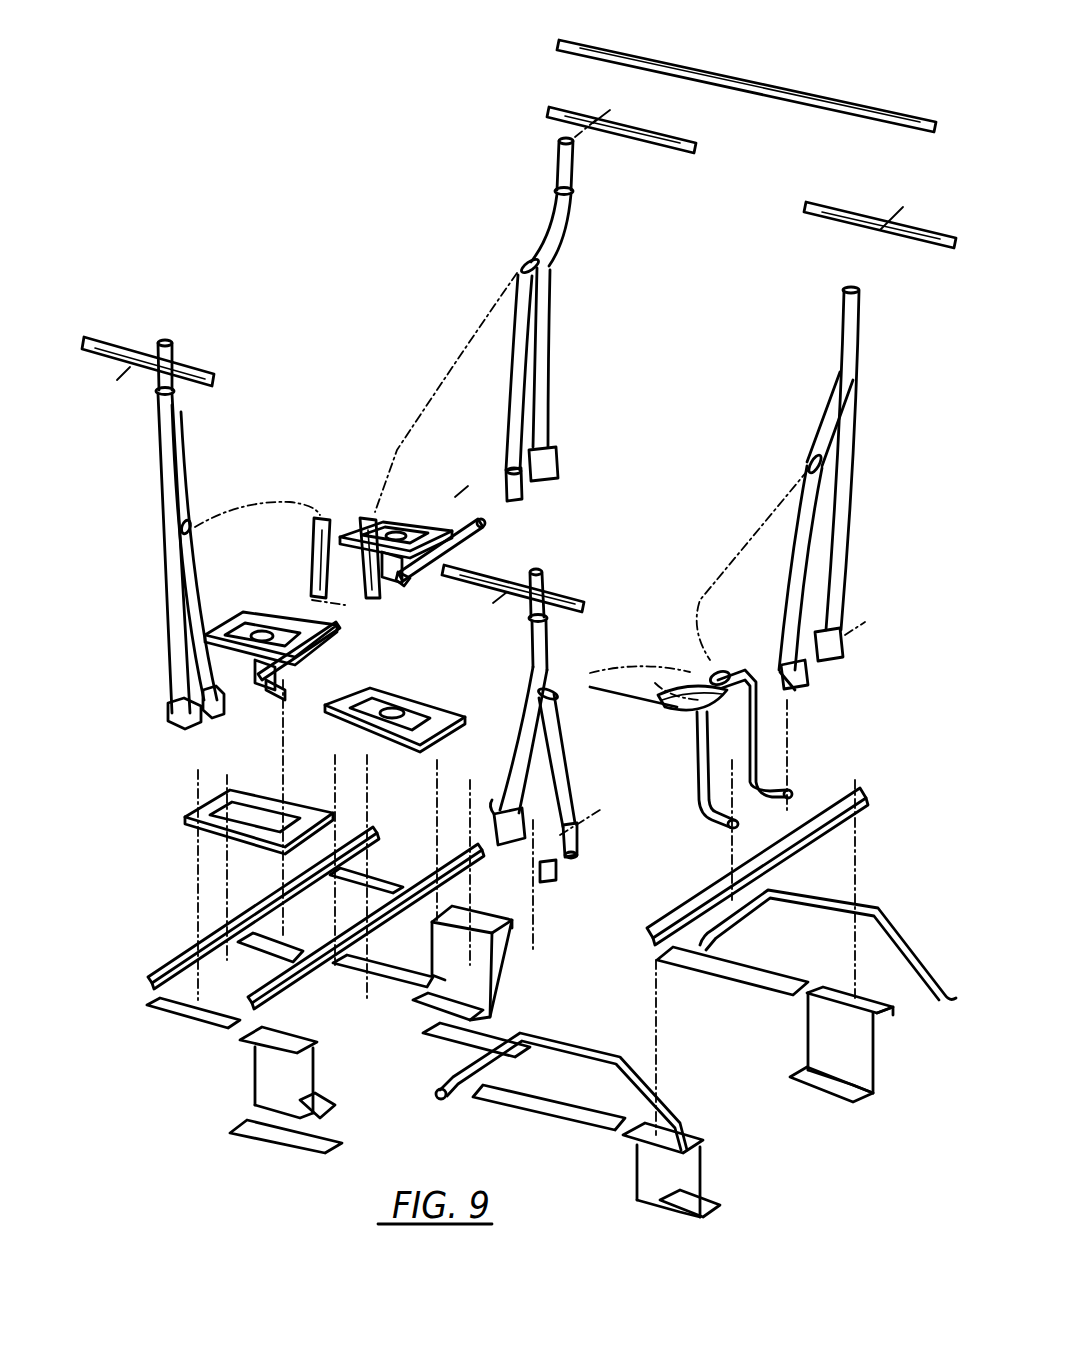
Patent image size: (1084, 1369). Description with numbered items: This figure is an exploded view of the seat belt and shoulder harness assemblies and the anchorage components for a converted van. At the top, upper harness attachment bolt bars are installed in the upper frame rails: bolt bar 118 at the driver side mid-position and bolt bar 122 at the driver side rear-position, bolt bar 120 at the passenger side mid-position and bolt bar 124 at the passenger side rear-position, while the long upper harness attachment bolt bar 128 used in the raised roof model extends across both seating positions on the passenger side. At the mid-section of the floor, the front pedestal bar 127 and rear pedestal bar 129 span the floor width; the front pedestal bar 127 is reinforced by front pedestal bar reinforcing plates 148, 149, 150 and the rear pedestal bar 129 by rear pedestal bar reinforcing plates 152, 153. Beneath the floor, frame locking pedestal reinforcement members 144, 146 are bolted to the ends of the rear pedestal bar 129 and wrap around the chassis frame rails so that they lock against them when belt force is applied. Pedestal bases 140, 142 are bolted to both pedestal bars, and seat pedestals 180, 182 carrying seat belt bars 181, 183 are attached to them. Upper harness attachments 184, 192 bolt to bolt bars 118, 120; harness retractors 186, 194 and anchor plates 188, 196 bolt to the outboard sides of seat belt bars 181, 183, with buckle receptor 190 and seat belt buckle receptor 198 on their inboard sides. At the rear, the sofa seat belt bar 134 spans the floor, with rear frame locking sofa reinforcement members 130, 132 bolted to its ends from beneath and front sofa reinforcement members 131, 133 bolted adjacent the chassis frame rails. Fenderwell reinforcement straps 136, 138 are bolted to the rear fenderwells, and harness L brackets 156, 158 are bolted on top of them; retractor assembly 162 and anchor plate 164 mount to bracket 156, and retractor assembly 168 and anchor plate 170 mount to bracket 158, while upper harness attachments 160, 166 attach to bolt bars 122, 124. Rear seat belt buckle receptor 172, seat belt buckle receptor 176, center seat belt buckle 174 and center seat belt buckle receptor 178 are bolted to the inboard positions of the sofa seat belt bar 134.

The upper harness attachment bolt bar 118 is at (205, 380).
The upper harness attachment bolt bar 120 is at (662, 145).
The upper harness attachment bolt bar 122 is at (585, 598).
The upper harness attachment bolt bar 124 is at (815, 222).
The front pedestal bar 127 is at (175, 958).
The upper harness attachment bolt bar 128 is at (797, 108).
The rear pedestal bar 129 is at (313, 967).
The rear frame locking sofa reinforcement member 130 is at (663, 1193).
The front sofa reinforcement member 131 is at (580, 1083).
The rear frame locking sofa reinforcement member 132 is at (837, 1100).
The front sofa reinforcement member 133 is at (800, 967).
The sofa seat belt bar 134 is at (868, 795).
The rear fenderwell reinforcement strap 136 is at (610, 1017).
The fenderwell reinforcement strap 138 is at (920, 893).
The pedestal base 140 is at (188, 818).
The pedestal base 142 is at (440, 706).
The frame locking pedestal reinforcement member 144 is at (320, 1082).
The frame locking pedestal reinforcement member 146 is at (500, 968).
The front pedestal bar reinforcing plate 148 is at (170, 1017).
The front pedestal bar reinforcing plate 149 is at (267, 952).
The front pedestal bar reinforcing plate 150 is at (375, 877).
The rear pedestal bar reinforcing plate 152 is at (320, 1157).
The rear pedestal bar reinforcing plate 153 is at (410, 990).
The harness L bracket 156 is at (556, 878).
The harness L bracket 158 is at (810, 683).
The upper harness attachment 160 is at (544, 573).
The retractor assembly 162 is at (507, 787).
The anchor plate 164 is at (580, 855).
The upper harness attachment 166 is at (847, 281).
The retractor assembly 168 is at (843, 632).
The anchor plate 170 is at (797, 700).
The rear seat belt buckle receptor 172 is at (665, 718).
The center seat belt buckle 174 is at (645, 681).
The seat belt buckle receptor 176 is at (743, 672).
The center seat belt buckle receptor 178 is at (720, 680).
The seat pedestal 180 is at (235, 615).
The seat belt bar 181 is at (343, 630).
The seat pedestal 182 is at (400, 520).
The seat belt bar 183 is at (485, 530).
The upper harness attachment 184 is at (175, 346).
The harness retractor 186 is at (175, 718).
The anchor plate 188 is at (215, 718).
The buckle receptor 190 is at (340, 480).
The upper harness attachment 192 is at (560, 190).
The harness retractor 194 is at (558, 460).
The anchor plate 196 is at (524, 497).
The seat belt buckle receptor 198 is at (368, 517).